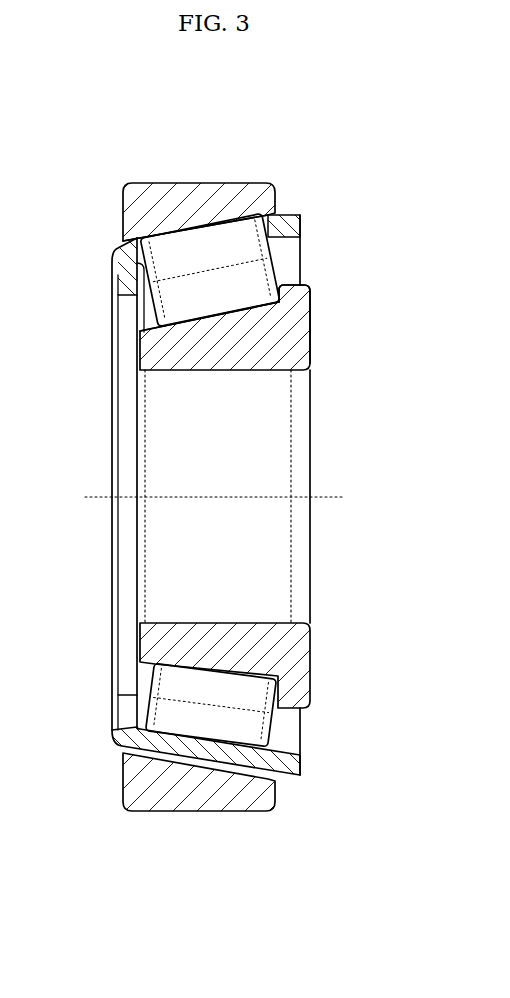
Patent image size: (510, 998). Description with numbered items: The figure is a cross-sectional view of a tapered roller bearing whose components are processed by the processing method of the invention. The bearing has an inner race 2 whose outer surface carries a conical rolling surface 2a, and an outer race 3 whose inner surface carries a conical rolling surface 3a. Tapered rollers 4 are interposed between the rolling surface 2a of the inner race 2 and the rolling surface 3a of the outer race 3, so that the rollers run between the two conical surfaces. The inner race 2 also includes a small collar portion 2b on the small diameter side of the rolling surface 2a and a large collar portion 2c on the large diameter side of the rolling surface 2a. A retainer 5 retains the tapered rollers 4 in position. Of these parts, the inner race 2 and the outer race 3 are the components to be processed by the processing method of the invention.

The inner race 2 is at (250, 496).
The rolling surface 2a is at (221, 322).
The small collar portion 2b is at (136, 330).
The large collar portion 2c is at (283, 341).
The outer race 3 is at (121, 209).
The rolling surface 3a is at (174, 238).
The tapered roller 4 is at (222, 245).
The retainer 5 is at (193, 763).